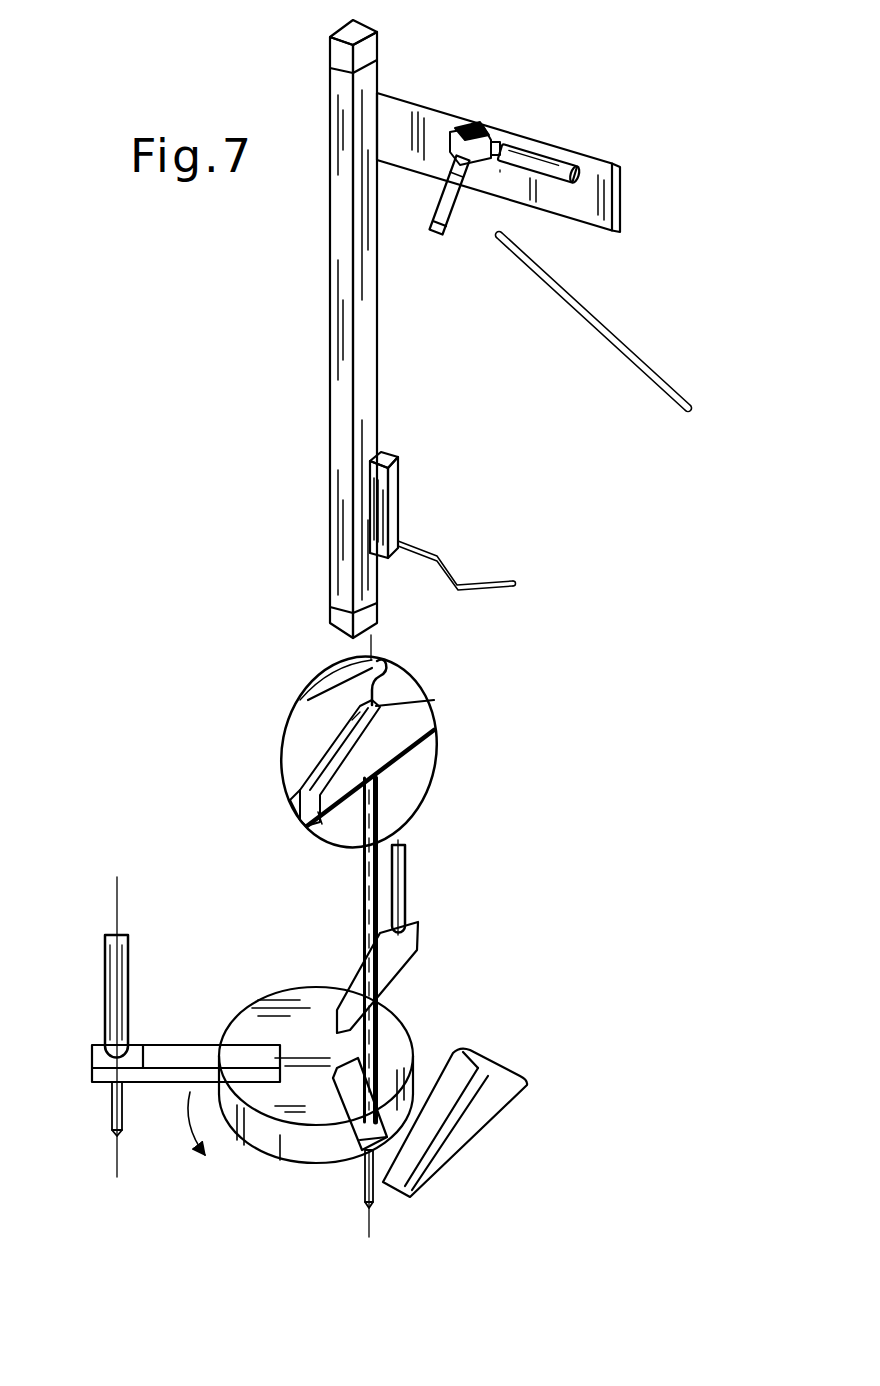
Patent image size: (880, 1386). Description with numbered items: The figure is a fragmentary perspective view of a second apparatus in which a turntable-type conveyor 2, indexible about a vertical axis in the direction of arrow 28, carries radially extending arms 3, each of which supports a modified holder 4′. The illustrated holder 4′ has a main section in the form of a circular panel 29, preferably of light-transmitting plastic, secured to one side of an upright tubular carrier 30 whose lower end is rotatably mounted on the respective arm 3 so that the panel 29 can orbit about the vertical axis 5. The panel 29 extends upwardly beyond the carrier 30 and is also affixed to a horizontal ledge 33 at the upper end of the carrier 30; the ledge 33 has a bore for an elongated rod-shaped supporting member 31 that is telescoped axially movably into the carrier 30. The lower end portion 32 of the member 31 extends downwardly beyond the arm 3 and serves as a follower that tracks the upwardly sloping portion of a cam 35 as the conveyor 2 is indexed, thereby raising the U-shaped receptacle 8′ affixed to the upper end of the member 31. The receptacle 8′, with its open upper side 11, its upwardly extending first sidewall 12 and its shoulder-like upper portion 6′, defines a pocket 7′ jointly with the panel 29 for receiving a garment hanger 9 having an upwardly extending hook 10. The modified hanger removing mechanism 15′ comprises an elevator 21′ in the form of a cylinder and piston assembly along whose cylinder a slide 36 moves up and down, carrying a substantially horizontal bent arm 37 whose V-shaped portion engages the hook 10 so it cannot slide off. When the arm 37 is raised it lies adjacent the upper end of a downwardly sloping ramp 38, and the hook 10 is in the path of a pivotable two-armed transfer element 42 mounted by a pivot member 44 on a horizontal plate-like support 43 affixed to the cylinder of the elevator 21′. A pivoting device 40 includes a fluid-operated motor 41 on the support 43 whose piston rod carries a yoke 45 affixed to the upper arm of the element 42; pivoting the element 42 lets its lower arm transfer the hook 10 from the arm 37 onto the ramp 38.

The conveyor 2 is at (278, 996).
The arm 3 is at (173, 1045).
The holder 4′ is at (442, 762).
The vertical axis 5 is at (120, 897).
The upper portion 6′ is at (342, 677).
The pocket 7′ is at (297, 810).
The receptacle 8′ is at (432, 710).
The garment hanger 9 is at (356, 722).
The hook 10 is at (320, 697).
The open upper side 11 is at (372, 722).
The first sidewall 12 is at (434, 737).
The hanger removing mechanism 15′ is at (312, 352).
The elevator 21′ is at (328, 240).
The arrow 28 is at (188, 1096).
The circular plate or panel 29 is at (420, 787).
The tubular carrier 30 is at (105, 994).
The supporting member 31 is at (102, 1099).
The lower end portion 32 is at (112, 1135).
The horizontal ledge 33 is at (323, 822).
The cam 35 is at (455, 1123).
The slide 36 is at (400, 489).
The arm 37 is at (447, 563).
The ramp 38 is at (628, 345).
The pivoting device 40 is at (497, 178).
The fluid-operated motor 41 is at (553, 158).
The transfer element 42 is at (440, 232).
The plate-like support 43 is at (422, 108).
The pivot member 44 is at (456, 173).
The yoke 45 is at (490, 135).